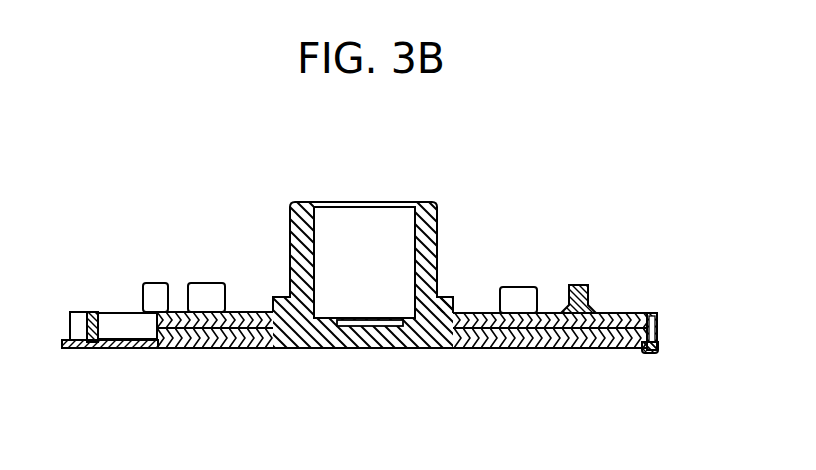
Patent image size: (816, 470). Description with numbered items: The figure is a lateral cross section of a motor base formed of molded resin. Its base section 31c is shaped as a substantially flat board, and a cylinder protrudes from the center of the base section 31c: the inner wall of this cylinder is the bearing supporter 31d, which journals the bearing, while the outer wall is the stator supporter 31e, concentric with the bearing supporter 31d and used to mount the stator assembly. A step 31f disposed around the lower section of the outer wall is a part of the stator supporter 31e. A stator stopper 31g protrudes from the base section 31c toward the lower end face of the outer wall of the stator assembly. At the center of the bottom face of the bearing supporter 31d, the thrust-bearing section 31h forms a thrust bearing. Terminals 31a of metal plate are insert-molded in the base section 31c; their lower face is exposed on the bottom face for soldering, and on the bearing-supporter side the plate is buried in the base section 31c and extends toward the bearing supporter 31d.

The terminal 31a is at (125, 347).
The base section 31c is at (428, 337).
The bearing supporter 31d is at (322, 215).
The stator supporter 31e is at (438, 240).
The step 31f is at (445, 297).
The stator stopper 31g is at (202, 282).
The thrust-bearing section 31h is at (367, 323).